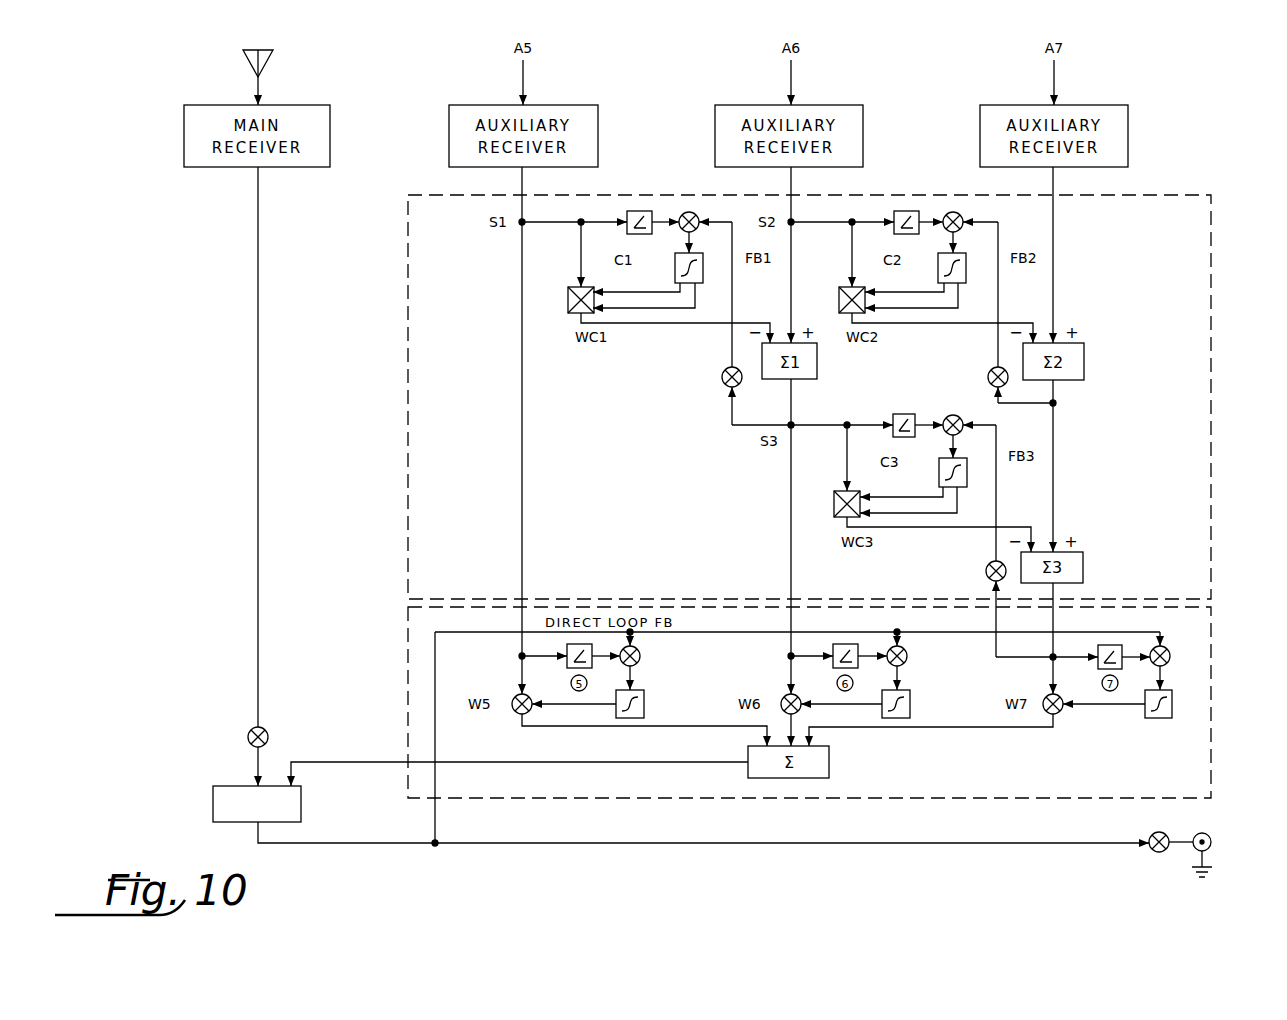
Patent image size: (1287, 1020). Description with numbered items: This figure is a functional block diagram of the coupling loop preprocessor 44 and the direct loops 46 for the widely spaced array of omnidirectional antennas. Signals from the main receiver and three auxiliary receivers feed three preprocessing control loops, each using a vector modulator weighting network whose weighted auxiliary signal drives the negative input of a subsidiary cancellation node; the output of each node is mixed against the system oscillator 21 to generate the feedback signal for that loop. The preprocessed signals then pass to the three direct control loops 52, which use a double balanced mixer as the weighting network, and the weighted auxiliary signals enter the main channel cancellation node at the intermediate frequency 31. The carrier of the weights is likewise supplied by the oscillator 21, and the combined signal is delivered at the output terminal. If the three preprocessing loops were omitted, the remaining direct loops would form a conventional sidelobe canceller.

The 21 MHz oscillator 21 is at (722, 377).
The 31 MHz cancellation node frequency 31 is at (666, 804).
The coupling loop preprocessor 44 is at (1211, 440).
The direct loops 46 is at (1211, 690).
The direct control loops 52 is at (1217, 843).